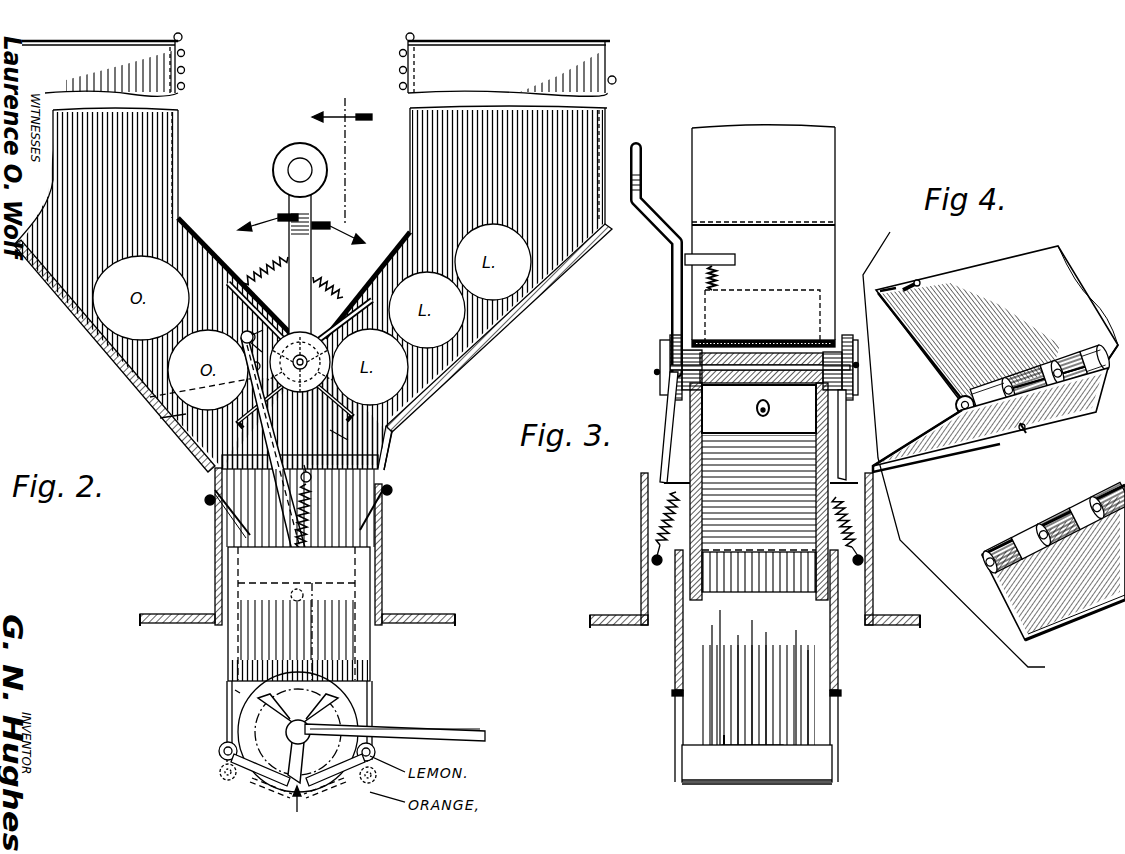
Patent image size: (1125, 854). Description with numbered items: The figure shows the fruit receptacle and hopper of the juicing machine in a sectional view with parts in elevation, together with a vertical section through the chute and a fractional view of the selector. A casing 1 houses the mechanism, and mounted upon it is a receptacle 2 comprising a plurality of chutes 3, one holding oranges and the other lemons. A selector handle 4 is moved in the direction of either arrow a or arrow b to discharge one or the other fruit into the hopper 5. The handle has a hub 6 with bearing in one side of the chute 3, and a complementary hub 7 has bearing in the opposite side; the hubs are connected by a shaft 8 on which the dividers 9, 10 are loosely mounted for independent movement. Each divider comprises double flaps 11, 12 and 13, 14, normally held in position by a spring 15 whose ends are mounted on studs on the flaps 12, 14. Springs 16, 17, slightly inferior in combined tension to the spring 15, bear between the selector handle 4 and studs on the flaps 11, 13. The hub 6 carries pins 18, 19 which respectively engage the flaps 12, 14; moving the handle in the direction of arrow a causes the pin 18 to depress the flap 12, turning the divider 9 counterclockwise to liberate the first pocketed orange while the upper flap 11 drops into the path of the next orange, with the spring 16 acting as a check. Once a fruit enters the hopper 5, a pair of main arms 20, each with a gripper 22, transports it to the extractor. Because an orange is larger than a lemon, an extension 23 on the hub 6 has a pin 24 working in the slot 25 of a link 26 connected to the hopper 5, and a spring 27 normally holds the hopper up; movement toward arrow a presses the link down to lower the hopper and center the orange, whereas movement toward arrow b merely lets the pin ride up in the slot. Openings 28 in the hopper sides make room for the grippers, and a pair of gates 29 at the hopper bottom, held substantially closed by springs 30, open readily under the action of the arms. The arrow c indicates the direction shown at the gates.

In FIG. 2, the casing 1 is at (426, 614).
In FIG. 3, the casing 1 is at (608, 615).
In FIG. 2, the receptacle 2 is at (315, 139).
In FIG. 2, the chute 3 is at (95, 355).
In FIG. 3, the chute 3 is at (692, 412).
In FIG. 2, the selector handle 4 is at (282, 178).
In FIG. 3, the selector handle 4 is at (668, 236).
In FIG. 2, the hopper 5 is at (243, 634).
In FIG. 3, the hopper 5 is at (676, 660).
In FIG. 3, the hub 6 is at (682, 352).
In FIG. 3, the complementary hub 7 is at (845, 362).
In FIG. 3, the shaft 8 is at (838, 384).
In FIG. 2, the divider 9 is at (228, 295).
In FIG. 3, the divider 9 is at (695, 323).
In FIG. 4, the divider 9 is at (932, 392).
In FIG. 2, the divider 10 is at (358, 314).
In FIG. 4, the divider 10 is at (998, 530).
In FIG. 2, the flap 11 is at (243, 327).
In FIG. 3, the flap 11 is at (705, 306).
In FIG. 4, the flap 11 is at (972, 268).
In FIG. 2, the flap 12 is at (185, 416).
In FIG. 3, the flap 12 is at (716, 420).
In FIG. 4, the flap 12 is at (936, 463).
In FIG. 2, the flap 13 is at (350, 355).
In FIG. 4, the flap 13 is at (1085, 492).
In FIG. 2, the flap 14 is at (393, 428).
In FIG. 4, the flap 14 is at (1075, 616).
In FIG. 2, the spring 15 is at (346, 437).
In FIG. 3, the spring 15 is at (755, 404).
In FIG. 2, the spring 16 is at (270, 268).
In FIG. 3, the spring 16 is at (710, 278).
In FIG. 2, the spring 17 is at (322, 290).
In FIG. 2, the pin 18 is at (177, 393).
In FIG. 2, the pin 19 is at (300, 454).
In FIG. 2, the main arm 20 is at (428, 724).
In FIG. 2, the gripper 22 is at (275, 738).
In FIG. 2, the extension 23 is at (250, 350).
In FIG. 2, the pin 24 is at (252, 366).
In FIG. 2, the slot 25 is at (262, 315).
In FIG. 2, the link 26 is at (278, 474).
In FIG. 3, the link 26 is at (665, 440).
In FIG. 2, the spring 27 is at (318, 500).
In FIG. 3, the spring 27 is at (660, 522).
In FIG. 2, the opening 28 is at (232, 690).
In FIG. 3, the opening 28 is at (670, 694).
In FIG. 2, the gate 29 is at (272, 782).
In FIG. 3, the gate 29 is at (712, 770).
In FIG. 2, the spring 30 is at (219, 750).
In FIG. 3, the spring 30 is at (722, 745).
In FIG. 2, the arrow a is at (268, 221).
In FIG. 2, the arrow b is at (338, 233).
In FIG. 2, the direction arrow c is at (301, 812).